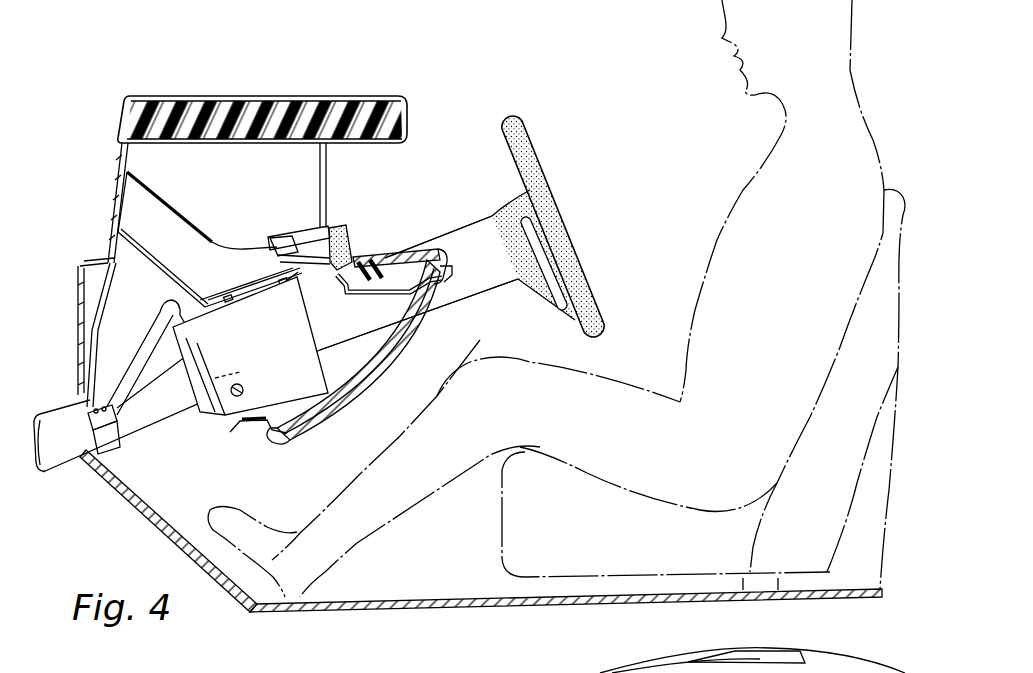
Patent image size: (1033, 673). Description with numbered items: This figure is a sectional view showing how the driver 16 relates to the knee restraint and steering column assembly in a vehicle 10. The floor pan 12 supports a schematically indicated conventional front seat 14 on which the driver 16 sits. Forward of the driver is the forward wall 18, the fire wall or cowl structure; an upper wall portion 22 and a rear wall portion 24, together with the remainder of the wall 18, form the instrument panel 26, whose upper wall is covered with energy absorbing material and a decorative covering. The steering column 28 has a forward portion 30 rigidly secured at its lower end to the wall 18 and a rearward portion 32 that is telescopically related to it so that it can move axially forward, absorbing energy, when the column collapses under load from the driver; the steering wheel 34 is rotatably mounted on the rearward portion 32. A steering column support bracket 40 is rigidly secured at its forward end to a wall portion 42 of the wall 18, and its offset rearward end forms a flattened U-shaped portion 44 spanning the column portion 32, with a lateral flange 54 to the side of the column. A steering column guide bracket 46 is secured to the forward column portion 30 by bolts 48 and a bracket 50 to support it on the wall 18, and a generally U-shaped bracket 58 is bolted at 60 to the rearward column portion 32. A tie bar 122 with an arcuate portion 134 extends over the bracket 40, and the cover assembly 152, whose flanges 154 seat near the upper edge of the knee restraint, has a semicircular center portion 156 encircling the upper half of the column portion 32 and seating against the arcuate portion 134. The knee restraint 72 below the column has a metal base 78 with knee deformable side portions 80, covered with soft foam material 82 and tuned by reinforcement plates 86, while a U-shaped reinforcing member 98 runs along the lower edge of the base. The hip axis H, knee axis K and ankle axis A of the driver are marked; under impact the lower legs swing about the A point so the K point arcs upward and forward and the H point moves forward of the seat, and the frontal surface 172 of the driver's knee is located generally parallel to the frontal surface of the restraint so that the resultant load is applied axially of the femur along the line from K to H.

The vehicle 10 is at (226, 594).
The floor pan 12 is at (453, 604).
The front seat 14 is at (522, 547).
The vehicle driver 16 is at (746, 200).
The forward wall 18 is at (76, 300).
The upper wall portion 22 is at (241, 138).
The rear wall portion 24 is at (329, 178).
The instrument panel 26 is at (319, 90).
The steering column 28 is at (483, 220).
The forward portion of column 30 is at (60, 450).
The rearward portion of column 32 is at (483, 300).
The steering wheel 34 is at (528, 140).
The steering column support bracket 40 is at (167, 200).
The wall portion 42 is at (121, 200).
The U-shaped portion 44 is at (243, 248).
The steering column guide bracket 46 is at (116, 287).
The bolts 48 is at (95, 420).
The bracket 50 is at (108, 448).
The lateral flange 54 is at (240, 290).
The U-shaped bracket 58 is at (222, 343).
The bolt 60 is at (244, 390).
The knee restraint 72 is at (297, 446).
The metal base 78 is at (405, 298).
The knee deformable side portions 80 is at (385, 331).
The soft foam material 82 is at (380, 380).
The reinforcement plates 86 is at (334, 427).
The U-shaped reinforcing member 98 is at (250, 424).
The tie bar 122 is at (306, 228).
The arcuate portion 134 is at (285, 236).
The cover assembly 152 is at (392, 256).
The flanges 154 is at (447, 290).
The semicircular center portion 156 is at (346, 244).
The frontal surface of knee 172 is at (472, 362).
The A point A is at (346, 519).
The K point K is at (499, 404).
The H point H is at (712, 456).